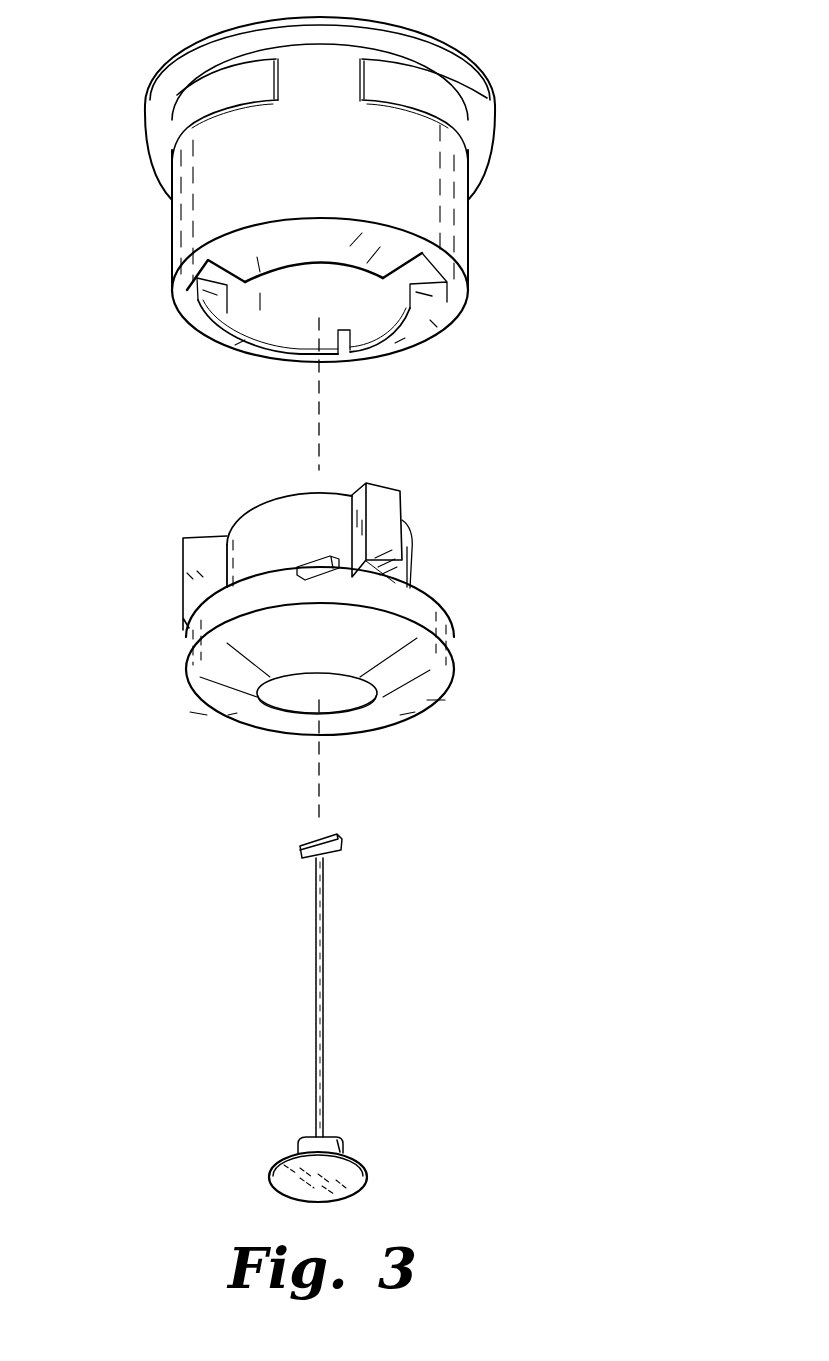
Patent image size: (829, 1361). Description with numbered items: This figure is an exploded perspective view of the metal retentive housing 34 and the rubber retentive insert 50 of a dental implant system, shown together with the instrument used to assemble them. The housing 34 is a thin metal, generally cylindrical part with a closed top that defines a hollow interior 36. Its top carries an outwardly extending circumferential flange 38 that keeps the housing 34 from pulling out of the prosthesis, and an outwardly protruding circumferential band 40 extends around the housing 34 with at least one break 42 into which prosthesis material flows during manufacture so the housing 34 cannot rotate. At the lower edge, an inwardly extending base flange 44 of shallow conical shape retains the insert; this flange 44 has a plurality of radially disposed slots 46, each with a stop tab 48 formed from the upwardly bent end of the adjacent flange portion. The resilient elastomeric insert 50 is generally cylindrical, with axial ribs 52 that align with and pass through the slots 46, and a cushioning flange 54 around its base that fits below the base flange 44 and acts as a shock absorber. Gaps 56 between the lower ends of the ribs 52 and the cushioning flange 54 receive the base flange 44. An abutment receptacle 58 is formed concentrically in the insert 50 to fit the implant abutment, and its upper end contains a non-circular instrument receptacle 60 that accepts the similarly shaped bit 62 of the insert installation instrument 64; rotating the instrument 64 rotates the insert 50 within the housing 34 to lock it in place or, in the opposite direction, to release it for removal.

The housing 34 is at (172, 218).
The hollow interior 36 is at (290, 325).
The circumferential flange 38 is at (148, 78).
The band 40 is at (150, 157).
The break 42 is at (313, 95).
The base flange 44 is at (315, 226).
The slots 46 is at (200, 296).
The stop tab 48 is at (340, 330).
The resilient elastomeric insert 50 is at (245, 513).
The axial ribs 52 is at (183, 560).
The cushioning flange 54 is at (192, 683).
The gaps 56 is at (400, 583).
The abutment receptacle 58 is at (297, 700).
The instrument receptacle 60 is at (297, 569).
The bit 62 is at (298, 847).
The insert installation instrument 64 is at (272, 1168).